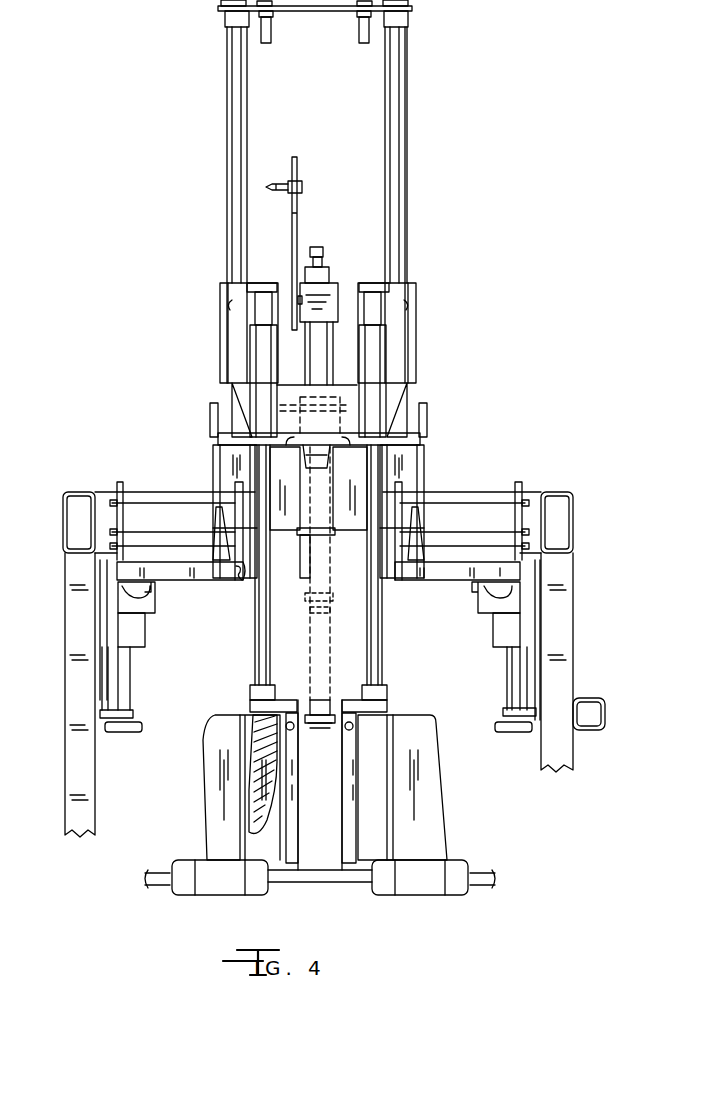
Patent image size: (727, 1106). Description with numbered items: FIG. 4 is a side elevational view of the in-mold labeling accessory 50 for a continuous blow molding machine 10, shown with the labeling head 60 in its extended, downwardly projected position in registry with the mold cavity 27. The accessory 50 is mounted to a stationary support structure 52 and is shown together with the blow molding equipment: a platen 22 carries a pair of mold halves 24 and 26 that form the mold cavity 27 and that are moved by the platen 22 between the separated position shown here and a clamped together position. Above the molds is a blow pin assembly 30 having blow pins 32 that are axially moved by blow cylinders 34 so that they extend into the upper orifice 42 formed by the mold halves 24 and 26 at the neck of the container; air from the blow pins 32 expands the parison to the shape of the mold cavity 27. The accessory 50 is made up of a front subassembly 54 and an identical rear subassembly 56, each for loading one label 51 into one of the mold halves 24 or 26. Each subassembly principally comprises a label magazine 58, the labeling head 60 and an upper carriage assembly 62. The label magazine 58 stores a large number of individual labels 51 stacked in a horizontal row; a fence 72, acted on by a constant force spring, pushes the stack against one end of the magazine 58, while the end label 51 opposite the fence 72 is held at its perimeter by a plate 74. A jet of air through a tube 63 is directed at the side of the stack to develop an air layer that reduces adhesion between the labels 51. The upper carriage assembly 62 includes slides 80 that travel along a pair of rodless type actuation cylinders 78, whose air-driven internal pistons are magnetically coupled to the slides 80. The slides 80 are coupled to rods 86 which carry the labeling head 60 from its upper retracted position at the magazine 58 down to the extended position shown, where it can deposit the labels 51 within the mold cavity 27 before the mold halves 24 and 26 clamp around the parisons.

The blow molding machine 10 is at (436, 388).
The platen 22 is at (202, 810).
The mold half 24 is at (384, 712).
The mold half 26 is at (272, 712).
The mold cavity 27 is at (258, 740).
The blow pin assembly 30 is at (344, 290).
The blow pin 32 is at (300, 638).
The blow cylinder 34 is at (305, 353).
The upper orifice 42 is at (256, 700).
The in-mold labeling accessory 50 is at (412, 262).
The label 51 is at (414, 570).
The stationary support structure 52 is at (575, 618).
The front subassembly 54 is at (480, 492).
The rear subassembly 56 is at (149, 490).
The label magazine 58 is at (440, 492).
The labeling head 60 is at (385, 682).
The upper carriage assembly 62 is at (407, 232).
The tube 63 is at (240, 578).
The fence 72 is at (418, 528).
The plate 74 is at (374, 548).
The rodless type actuation cylinder 78 is at (232, 190).
The slide 80 is at (220, 306).
The rod 86 is at (262, 398).